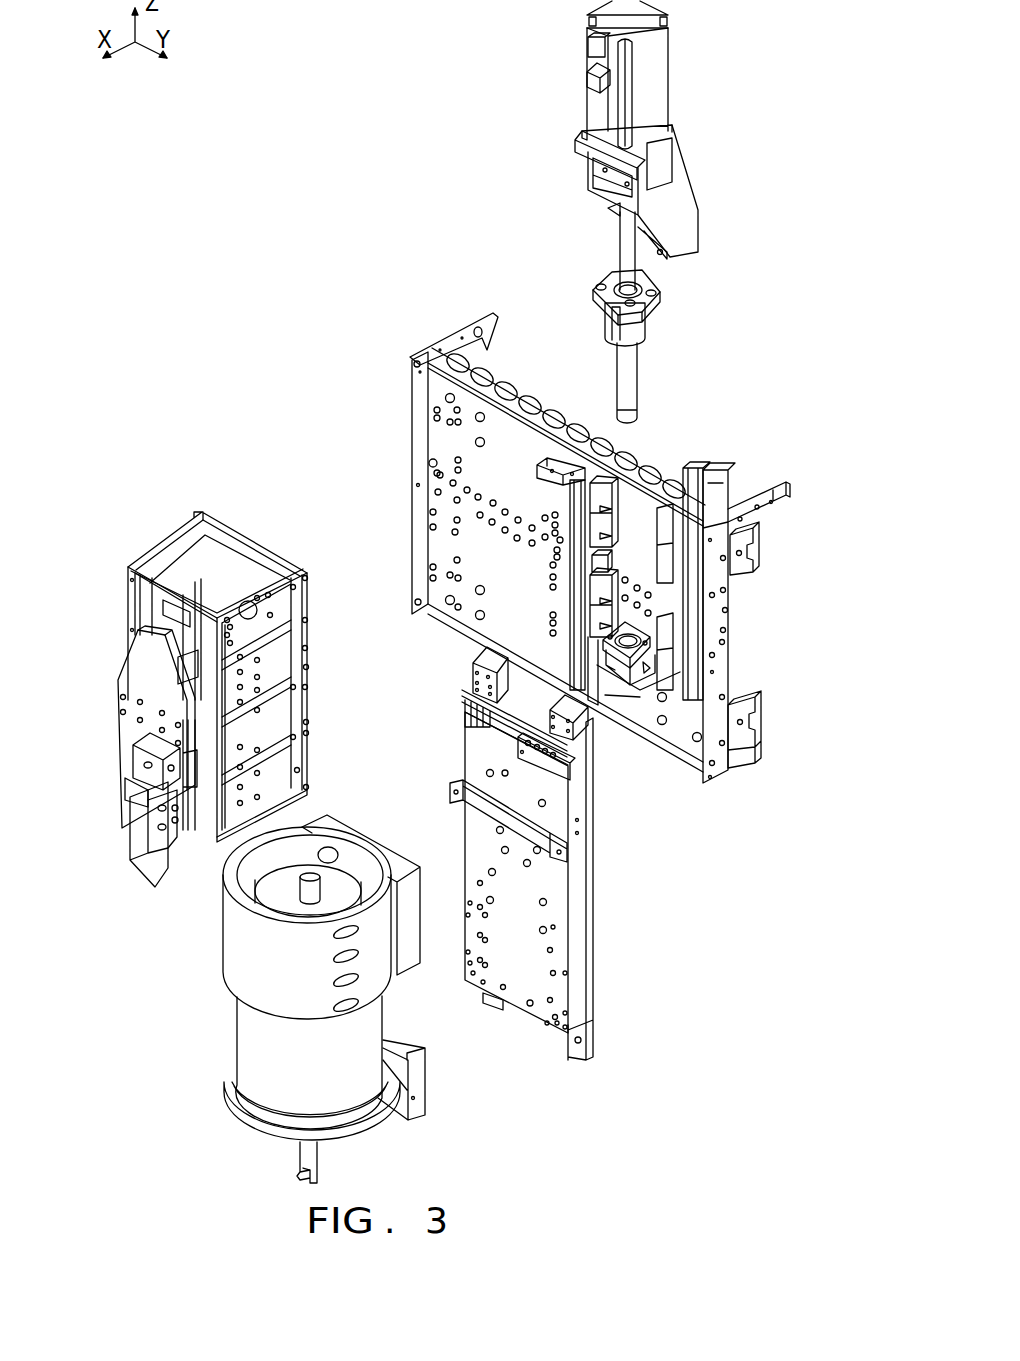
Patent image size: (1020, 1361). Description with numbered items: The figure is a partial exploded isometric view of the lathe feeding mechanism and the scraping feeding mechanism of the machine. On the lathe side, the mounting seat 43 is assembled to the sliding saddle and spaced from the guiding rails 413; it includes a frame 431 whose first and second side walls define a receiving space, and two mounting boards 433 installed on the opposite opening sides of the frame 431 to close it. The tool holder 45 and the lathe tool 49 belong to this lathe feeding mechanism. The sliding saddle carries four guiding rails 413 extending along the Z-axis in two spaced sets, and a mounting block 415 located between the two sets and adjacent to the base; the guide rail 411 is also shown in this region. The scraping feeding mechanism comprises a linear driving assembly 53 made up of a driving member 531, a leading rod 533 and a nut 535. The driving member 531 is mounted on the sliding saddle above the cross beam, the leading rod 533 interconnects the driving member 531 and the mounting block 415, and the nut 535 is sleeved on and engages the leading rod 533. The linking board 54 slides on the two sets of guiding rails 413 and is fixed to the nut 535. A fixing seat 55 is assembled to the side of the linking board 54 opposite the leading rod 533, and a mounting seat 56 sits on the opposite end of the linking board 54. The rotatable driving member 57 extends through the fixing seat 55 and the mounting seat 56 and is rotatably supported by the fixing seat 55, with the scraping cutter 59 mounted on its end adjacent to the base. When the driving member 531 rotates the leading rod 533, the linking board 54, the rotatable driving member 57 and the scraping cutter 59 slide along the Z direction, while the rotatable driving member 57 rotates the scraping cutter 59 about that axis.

The linear driving assembly 53 is at (556, 125).
The driving member 531 is at (650, 72).
The leading rod 533 is at (625, 270).
The nut 535 is at (640, 327).
The guide rail 411 is at (743, 567).
The guiding rails 413 is at (602, 485).
The mounting block 415 is at (641, 680).
The mounting seat 43 is at (120, 490).
The mounting boards 433 is at (190, 533).
The frame 431 is at (180, 560).
The tool holder 45 is at (140, 677).
The lathe tool 49 is at (132, 843).
The linking board 54 is at (578, 923).
The fixing seat 55 is at (410, 1078).
The mounting seat 56 is at (378, 947).
The rotatable driving member 57 is at (253, 1043).
The scraping cutter 59 is at (318, 1178).